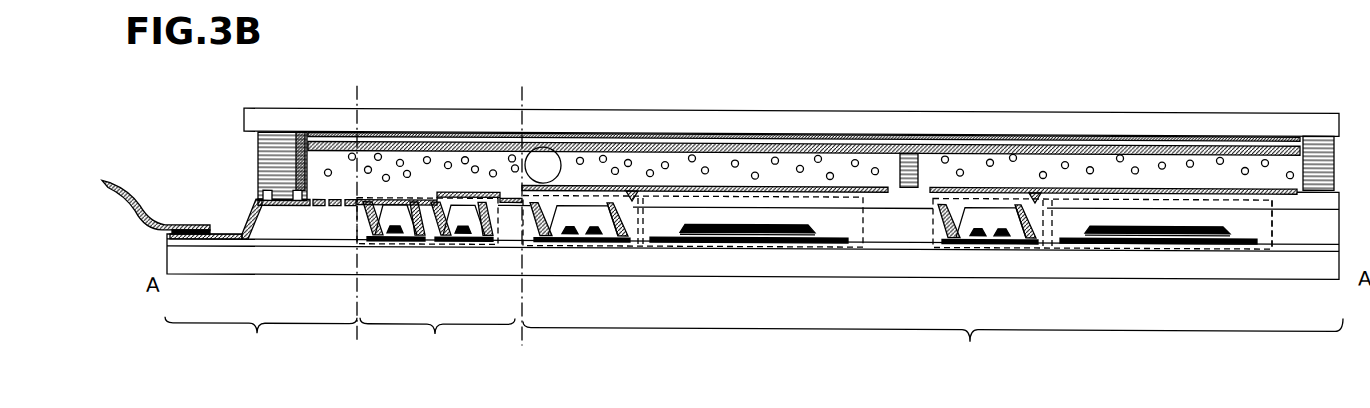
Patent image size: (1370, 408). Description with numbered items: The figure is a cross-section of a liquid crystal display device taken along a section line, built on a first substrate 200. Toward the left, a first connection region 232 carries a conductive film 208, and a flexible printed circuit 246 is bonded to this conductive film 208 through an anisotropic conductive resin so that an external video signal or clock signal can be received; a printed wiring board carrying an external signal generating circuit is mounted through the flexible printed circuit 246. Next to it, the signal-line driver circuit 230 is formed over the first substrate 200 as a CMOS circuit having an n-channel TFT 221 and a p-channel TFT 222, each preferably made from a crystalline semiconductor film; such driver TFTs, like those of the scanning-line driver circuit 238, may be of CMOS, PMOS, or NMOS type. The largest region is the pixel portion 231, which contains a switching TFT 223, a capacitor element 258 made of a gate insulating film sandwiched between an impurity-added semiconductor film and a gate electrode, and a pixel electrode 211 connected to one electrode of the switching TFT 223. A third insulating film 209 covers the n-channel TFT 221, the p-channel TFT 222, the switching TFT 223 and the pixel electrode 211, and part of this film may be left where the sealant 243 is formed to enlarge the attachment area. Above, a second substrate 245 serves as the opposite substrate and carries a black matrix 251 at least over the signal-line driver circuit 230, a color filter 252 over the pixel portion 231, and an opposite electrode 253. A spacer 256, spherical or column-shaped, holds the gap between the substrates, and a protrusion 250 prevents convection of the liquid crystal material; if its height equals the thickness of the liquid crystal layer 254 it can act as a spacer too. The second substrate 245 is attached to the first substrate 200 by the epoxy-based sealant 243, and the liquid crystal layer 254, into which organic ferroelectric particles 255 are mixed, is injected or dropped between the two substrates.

The scanning-line driver circuit 238 is at (791, 68).
The first substrate 200 is at (913, 262).
The conductive film 208 is at (263, 261).
The third insulating film 209 is at (299, 187).
The pixel electrode 211 is at (954, 260).
The n-channel TFT 221 is at (391, 245).
The p-channel TFT 222 is at (468, 245).
The switching TFT 223 is at (577, 247).
The signal-line driver circuit 230 is at (436, 280).
The pixel portion 231 is at (933, 294).
The first connection region 232 is at (261, 344).
The sealant 243 is at (276, 136).
The second substrate 245 is at (510, 116).
The flexible printed circuit 246 is at (148, 178).
The protrusion 250 is at (912, 168).
The black matrix 251 is at (387, 130).
The color filter 252 is at (822, 148).
The opposite electrode 253 is at (690, 147).
The liquid crystal layer 254 is at (1090, 160).
The organic ferroelectric particles 255 is at (1037, 185).
The spacer 256 is at (543, 162).
The capacitor element 258 is at (816, 244).